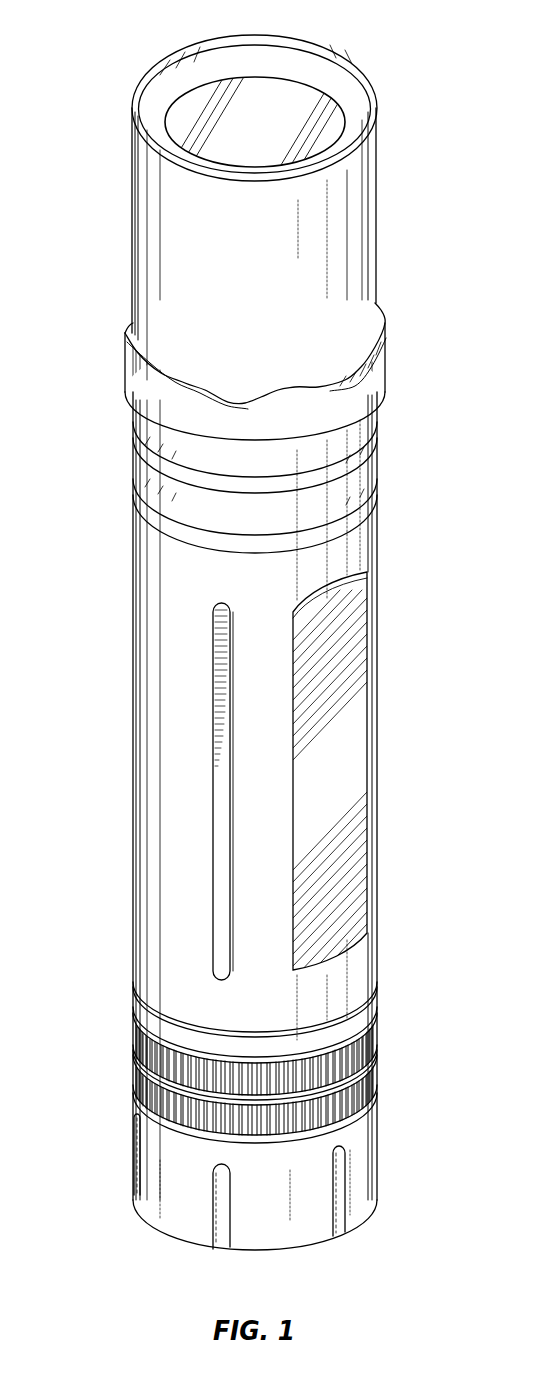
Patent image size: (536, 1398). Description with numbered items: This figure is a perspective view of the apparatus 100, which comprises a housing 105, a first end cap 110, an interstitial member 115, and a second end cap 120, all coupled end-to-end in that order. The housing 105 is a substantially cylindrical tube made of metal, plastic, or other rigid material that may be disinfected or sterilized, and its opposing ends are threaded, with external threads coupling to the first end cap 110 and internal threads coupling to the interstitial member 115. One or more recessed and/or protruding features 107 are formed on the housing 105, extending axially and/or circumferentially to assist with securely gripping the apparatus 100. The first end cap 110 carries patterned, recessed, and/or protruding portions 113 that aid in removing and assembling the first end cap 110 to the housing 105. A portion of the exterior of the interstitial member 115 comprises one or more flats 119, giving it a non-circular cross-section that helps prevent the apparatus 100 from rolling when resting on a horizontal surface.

The apparatus 100 is at (140, 48).
The second end cap 120 is at (132, 218).
The interstitial member 115 is at (124, 352).
The flats 119 is at (183, 395).
The housing 105 is at (377, 547).
The recessed and/or protruding features 107 is at (207, 483).
The patterned, recessed, and/or protruding portions 113 is at (135, 1058).
The first end cap 110 is at (163, 1218).